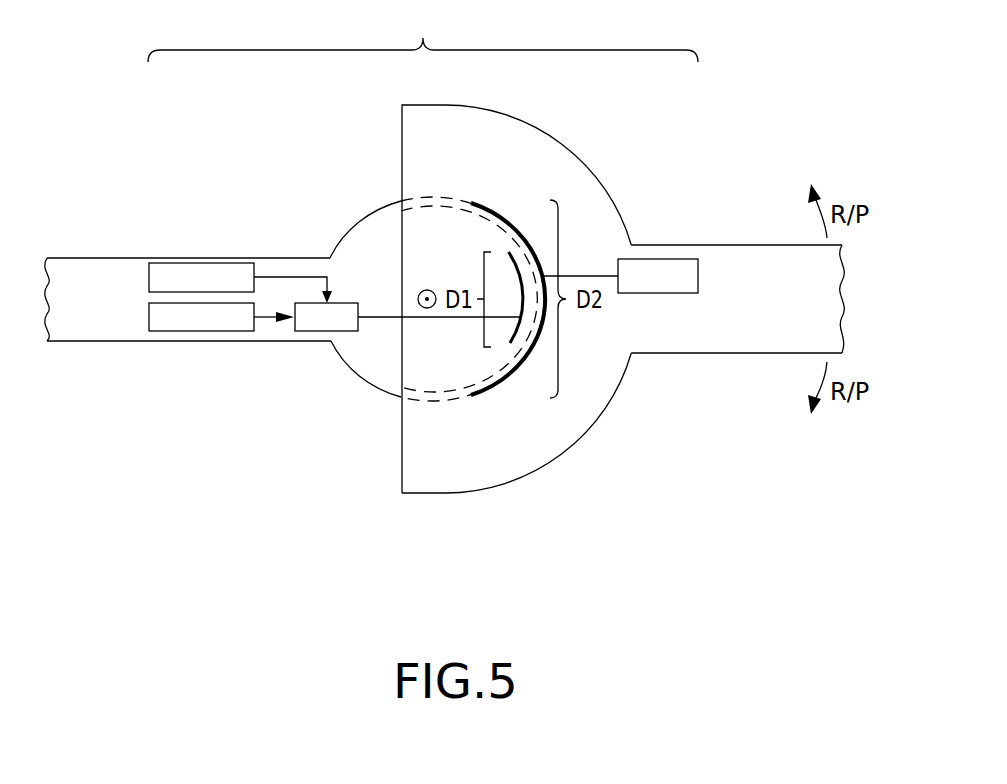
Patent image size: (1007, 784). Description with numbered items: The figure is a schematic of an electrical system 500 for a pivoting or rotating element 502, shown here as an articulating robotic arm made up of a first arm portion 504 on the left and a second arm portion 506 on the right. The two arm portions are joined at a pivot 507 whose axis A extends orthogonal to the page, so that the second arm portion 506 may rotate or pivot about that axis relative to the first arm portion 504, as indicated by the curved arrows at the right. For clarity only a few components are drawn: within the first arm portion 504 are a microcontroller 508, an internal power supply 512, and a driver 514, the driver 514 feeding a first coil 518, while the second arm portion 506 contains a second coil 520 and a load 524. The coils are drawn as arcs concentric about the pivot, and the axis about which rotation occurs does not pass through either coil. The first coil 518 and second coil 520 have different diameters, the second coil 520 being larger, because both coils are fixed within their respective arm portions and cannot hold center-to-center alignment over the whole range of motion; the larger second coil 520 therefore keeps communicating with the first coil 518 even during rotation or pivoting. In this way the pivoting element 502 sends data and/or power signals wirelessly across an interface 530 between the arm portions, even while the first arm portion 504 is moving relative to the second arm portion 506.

The electrical system 500 is at (423, 36).
The pivoting element 502 is at (490, 528).
The first arm portion 504 is at (87, 328).
The second arm portion 506 is at (700, 343).
The pivot 507 is at (424, 296).
The microcontroller 508 is at (221, 263).
The internal power supply 512 is at (178, 331).
The driver 514 is at (318, 331).
The first coil 518 is at (508, 252).
The second coil 520 is at (508, 215).
The load 524 is at (698, 288).
The interface 530 is at (450, 185).